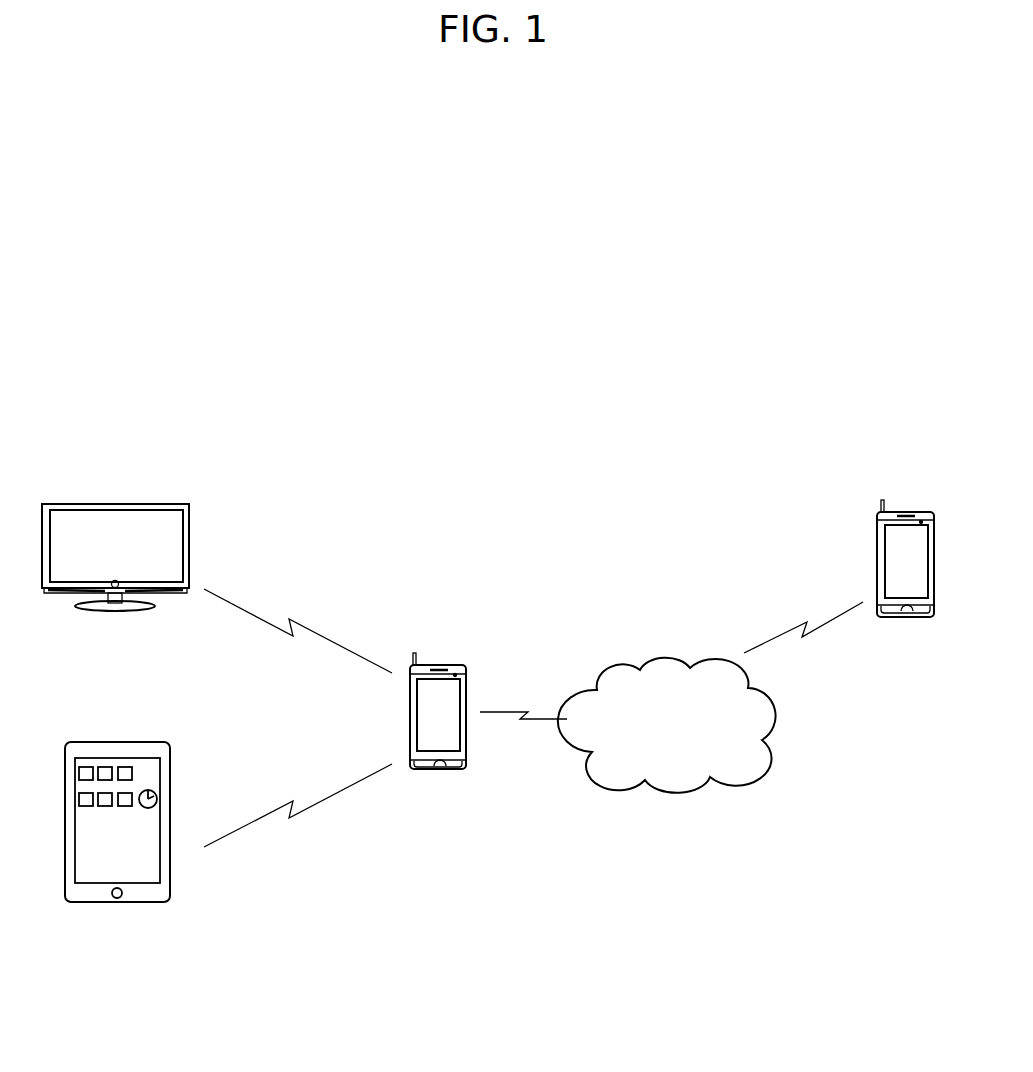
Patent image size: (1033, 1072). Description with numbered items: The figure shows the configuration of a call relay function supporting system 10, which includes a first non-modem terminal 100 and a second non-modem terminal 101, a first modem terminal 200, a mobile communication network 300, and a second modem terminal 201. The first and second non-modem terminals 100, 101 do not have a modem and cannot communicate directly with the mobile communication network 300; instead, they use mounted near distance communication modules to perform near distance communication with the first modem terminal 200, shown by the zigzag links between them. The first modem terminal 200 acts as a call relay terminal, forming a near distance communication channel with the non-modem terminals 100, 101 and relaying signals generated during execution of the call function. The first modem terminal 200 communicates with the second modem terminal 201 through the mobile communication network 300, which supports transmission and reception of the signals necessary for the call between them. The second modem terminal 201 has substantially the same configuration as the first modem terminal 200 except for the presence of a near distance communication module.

The call relay function supporting system 10 is at (681, 431).
The first non-modem terminal 100 is at (118, 741).
The second non-modem terminal 101 is at (118, 503).
The first modem terminal 200 is at (438, 662).
The second modem terminal 201 is at (905, 619).
The mobile communication network 300 is at (800, 686).